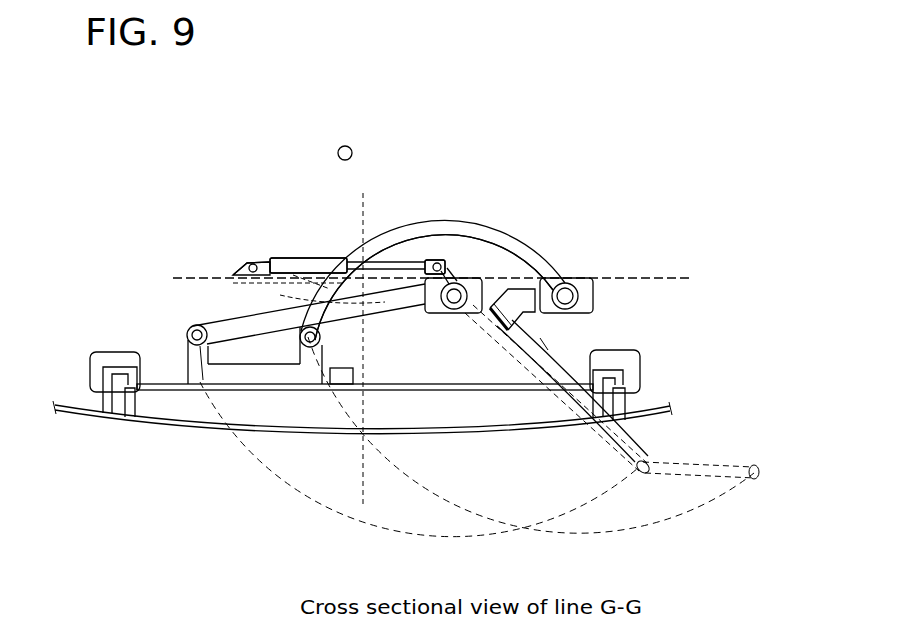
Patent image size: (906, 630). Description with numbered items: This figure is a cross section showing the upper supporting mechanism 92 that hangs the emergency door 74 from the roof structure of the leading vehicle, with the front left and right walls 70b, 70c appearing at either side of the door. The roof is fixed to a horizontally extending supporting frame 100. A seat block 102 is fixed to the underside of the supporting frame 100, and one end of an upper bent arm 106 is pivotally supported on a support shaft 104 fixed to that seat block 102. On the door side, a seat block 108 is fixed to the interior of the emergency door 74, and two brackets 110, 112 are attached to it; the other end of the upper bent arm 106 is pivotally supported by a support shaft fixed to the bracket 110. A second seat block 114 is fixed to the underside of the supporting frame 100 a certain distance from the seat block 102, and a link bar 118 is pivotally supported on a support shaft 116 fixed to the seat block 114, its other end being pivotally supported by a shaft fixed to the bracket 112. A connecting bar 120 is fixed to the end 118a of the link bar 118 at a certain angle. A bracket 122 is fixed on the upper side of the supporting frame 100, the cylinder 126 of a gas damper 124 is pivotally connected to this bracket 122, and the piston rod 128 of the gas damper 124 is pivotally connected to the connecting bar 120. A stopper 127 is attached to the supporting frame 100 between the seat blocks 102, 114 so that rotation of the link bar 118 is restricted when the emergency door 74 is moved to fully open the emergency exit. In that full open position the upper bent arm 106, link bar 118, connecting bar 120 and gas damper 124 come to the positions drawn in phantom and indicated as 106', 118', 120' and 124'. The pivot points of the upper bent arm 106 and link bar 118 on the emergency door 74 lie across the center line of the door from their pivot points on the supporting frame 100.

The upper supporting mechanism 92 is at (105, 160).
The supporting frame 100 is at (188, 276).
The seat block 102 is at (598, 294).
The support shaft 104 is at (571, 283).
The upper bent arm 106 is at (433, 243).
The upper bent arm in full open position 106' is at (533, 443).
The seat block 108 is at (350, 369).
The bracket 110 is at (325, 338).
The bracket 112 is at (191, 350).
The seat block 114 is at (511, 288).
The support shaft 116 is at (469, 257).
The link bar 118 is at (268, 312).
The link bar in full open position 118' is at (426, 421).
The end of link bar 118a is at (457, 280).
The connecting bar 120 is at (441, 213).
The connecting bar in full open position 120' is at (500, 361).
The bracket 122 is at (243, 258).
The gas damper 124 is at (339, 183).
The gas damper in full open position 124' is at (306, 293).
The cylinder 126 is at (300, 258).
The stopper 127 is at (560, 331).
The piston rod 128 is at (397, 258).
The front right wall 70b is at (653, 418).
The front left wall 70c is at (80, 412).
The emergency door 74 is at (293, 437).